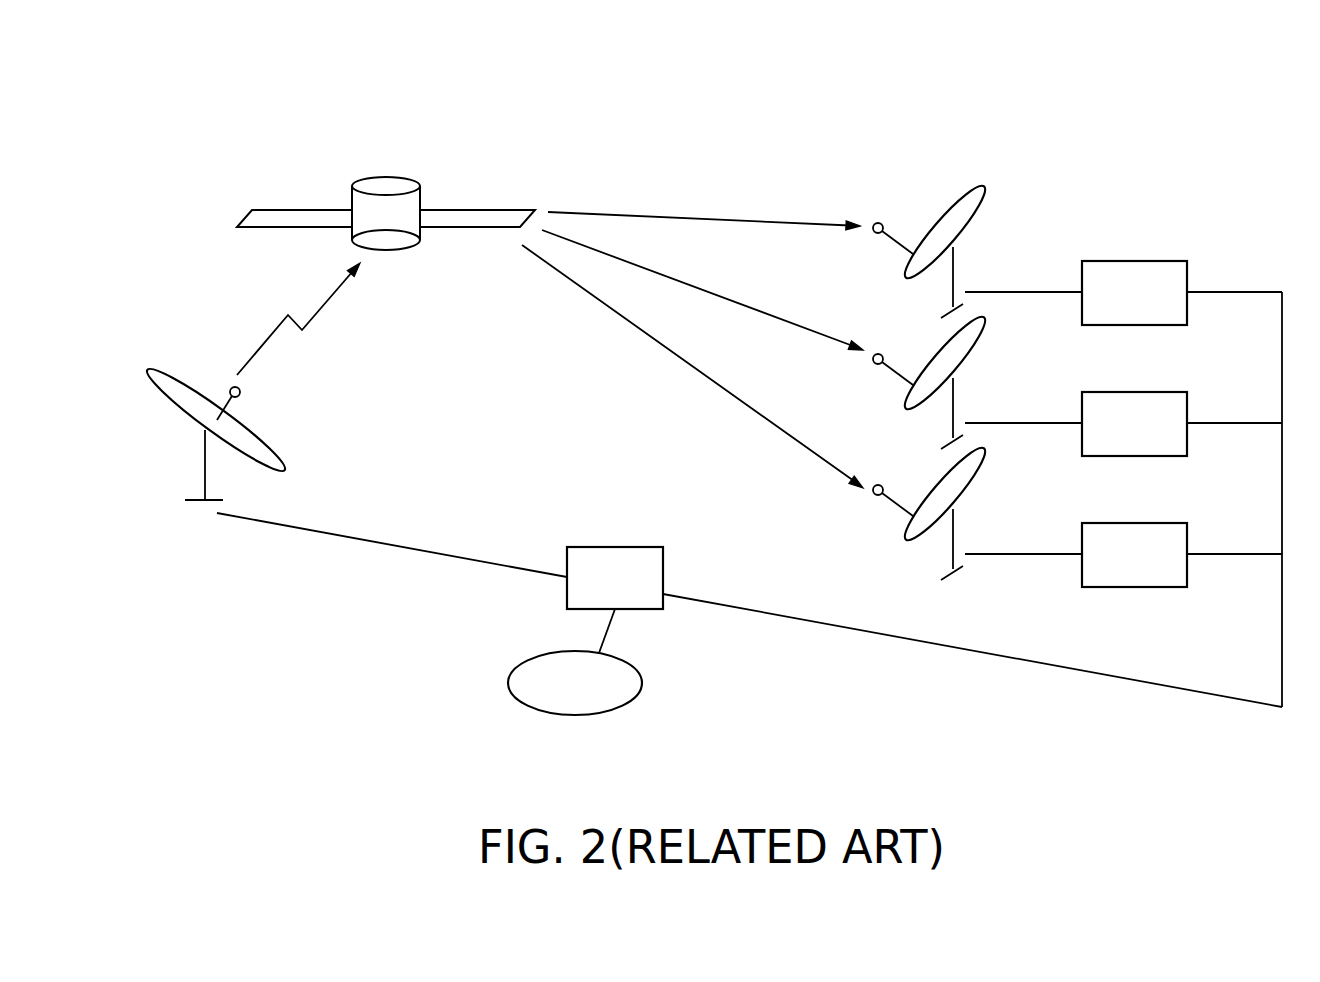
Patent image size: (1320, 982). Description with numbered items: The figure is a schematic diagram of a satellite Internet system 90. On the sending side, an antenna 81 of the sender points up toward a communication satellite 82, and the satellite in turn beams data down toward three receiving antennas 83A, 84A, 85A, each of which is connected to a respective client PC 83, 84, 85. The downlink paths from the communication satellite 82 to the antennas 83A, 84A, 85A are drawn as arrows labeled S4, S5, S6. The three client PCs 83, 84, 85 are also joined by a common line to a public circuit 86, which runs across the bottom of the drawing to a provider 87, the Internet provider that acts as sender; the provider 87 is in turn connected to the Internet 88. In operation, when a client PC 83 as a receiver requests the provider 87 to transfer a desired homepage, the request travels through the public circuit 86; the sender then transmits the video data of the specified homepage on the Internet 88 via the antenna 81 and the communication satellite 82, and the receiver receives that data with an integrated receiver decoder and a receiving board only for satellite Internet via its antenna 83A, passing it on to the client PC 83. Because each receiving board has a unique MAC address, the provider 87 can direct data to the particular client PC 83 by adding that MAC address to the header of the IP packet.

The satellite Internet system 90 is at (722, 73).
The antenna 81 is at (283, 452).
The communication satellite 82 is at (412, 176).
The client PC 83 is at (1187, 268).
The client PC 84 is at (1187, 399).
The client PC 85 is at (1187, 530).
The antenna 83A is at (984, 193).
The antenna 84A is at (984, 324).
The antenna 85A is at (984, 455).
The public circuit 86 is at (1023, 661).
The provider 87 is at (610, 547).
The Internet 88 is at (642, 683).
The satellite signal S4 is at (683, 218).
The satellite signal S5 is at (715, 293).
The satellite signal S6 is at (718, 383).